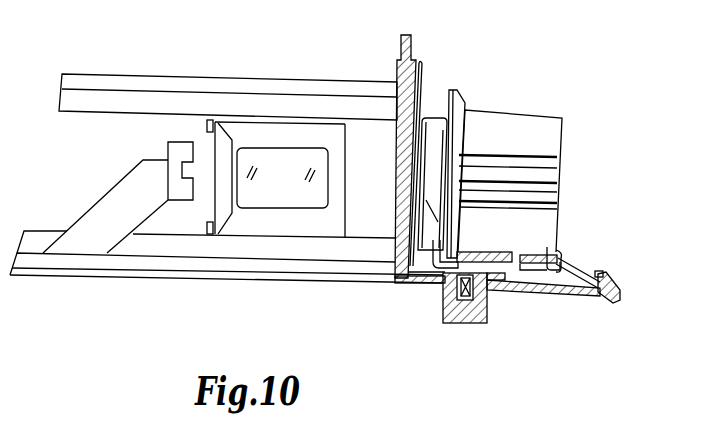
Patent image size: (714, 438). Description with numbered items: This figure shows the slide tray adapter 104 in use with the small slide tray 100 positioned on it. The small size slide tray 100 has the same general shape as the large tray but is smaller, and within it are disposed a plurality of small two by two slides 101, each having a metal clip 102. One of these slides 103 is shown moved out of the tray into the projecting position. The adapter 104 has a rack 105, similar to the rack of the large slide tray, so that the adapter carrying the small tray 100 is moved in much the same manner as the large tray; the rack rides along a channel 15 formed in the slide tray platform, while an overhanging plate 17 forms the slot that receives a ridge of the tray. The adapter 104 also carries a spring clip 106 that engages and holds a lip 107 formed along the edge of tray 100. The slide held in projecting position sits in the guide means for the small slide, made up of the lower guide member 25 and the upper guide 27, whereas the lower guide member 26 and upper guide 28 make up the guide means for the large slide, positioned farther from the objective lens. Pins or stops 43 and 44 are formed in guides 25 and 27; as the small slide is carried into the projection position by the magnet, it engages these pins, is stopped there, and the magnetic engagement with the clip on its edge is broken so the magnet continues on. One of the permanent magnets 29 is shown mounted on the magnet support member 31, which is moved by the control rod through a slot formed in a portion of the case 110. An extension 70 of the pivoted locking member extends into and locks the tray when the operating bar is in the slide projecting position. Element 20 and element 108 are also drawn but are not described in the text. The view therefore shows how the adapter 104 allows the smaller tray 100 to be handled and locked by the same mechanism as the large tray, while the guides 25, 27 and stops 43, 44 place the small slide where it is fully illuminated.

The channel 15 is at (468, 300).
The overhanging plate 17 is at (605, 272).
The upright wall 20 is at (422, 63).
The lower guide member 25 is at (47, 233).
The lower guide member 26 is at (165, 262).
The upper guide 27 is at (92, 111).
The upper guide 28 is at (155, 91).
The permanent magnet 29 is at (181, 142).
The magnet support member 31 is at (105, 201).
The pin or stop 43 is at (207, 228).
The pin or stop 44 is at (207, 123).
The extension of the locking member 70 is at (455, 286).
The small size slide tray 100 is at (514, 114).
The small slide 101 is at (437, 100).
The metal clip 102 is at (447, 148).
The slide in projecting position 103 is at (290, 185).
The slide tray adapter 104 is at (590, 249).
The rack 105 is at (492, 280).
The spring clip 106 is at (558, 253).
The lip 107 is at (550, 256).
The hook bracket 108 is at (452, 248).
The portion of the case 110 is at (118, 276).